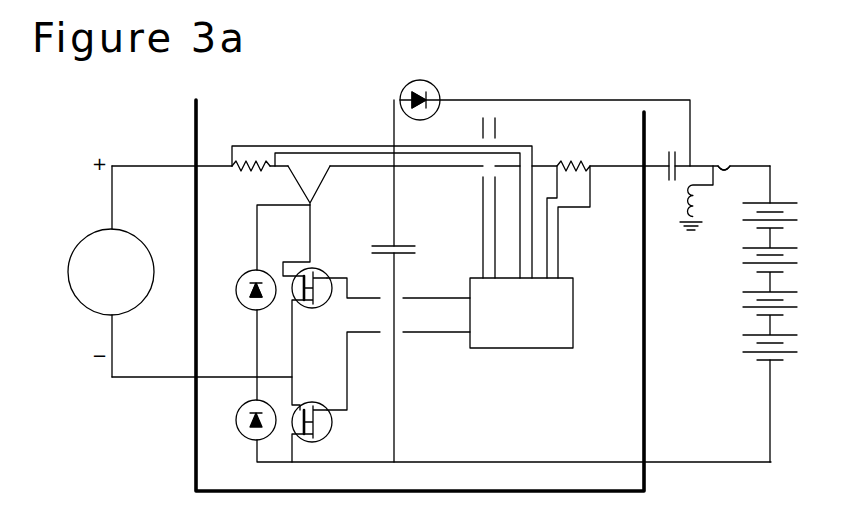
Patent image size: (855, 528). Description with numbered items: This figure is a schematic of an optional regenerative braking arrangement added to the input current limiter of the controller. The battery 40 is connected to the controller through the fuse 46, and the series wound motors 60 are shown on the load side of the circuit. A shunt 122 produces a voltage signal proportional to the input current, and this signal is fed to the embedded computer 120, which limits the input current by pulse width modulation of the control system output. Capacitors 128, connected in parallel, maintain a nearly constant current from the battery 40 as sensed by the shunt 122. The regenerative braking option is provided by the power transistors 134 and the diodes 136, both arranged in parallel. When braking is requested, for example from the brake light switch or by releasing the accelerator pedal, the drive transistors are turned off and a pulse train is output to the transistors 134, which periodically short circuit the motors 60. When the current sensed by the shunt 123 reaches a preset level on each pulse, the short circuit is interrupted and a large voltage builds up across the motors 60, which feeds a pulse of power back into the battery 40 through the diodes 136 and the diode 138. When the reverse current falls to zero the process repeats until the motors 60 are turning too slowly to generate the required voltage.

The battery 40 is at (772, 288).
The fuse 46 is at (733, 164).
The series wound motors 60 is at (111, 272).
The embedded computer 120 is at (521, 313).
The shunt 122 is at (571, 204).
The shunt 123 is at (256, 143).
The capacitors 128 is at (402, 246).
The power transistors 134 is at (306, 262).
The diodes 136 is at (236, 412).
The diode 138 is at (408, 86).